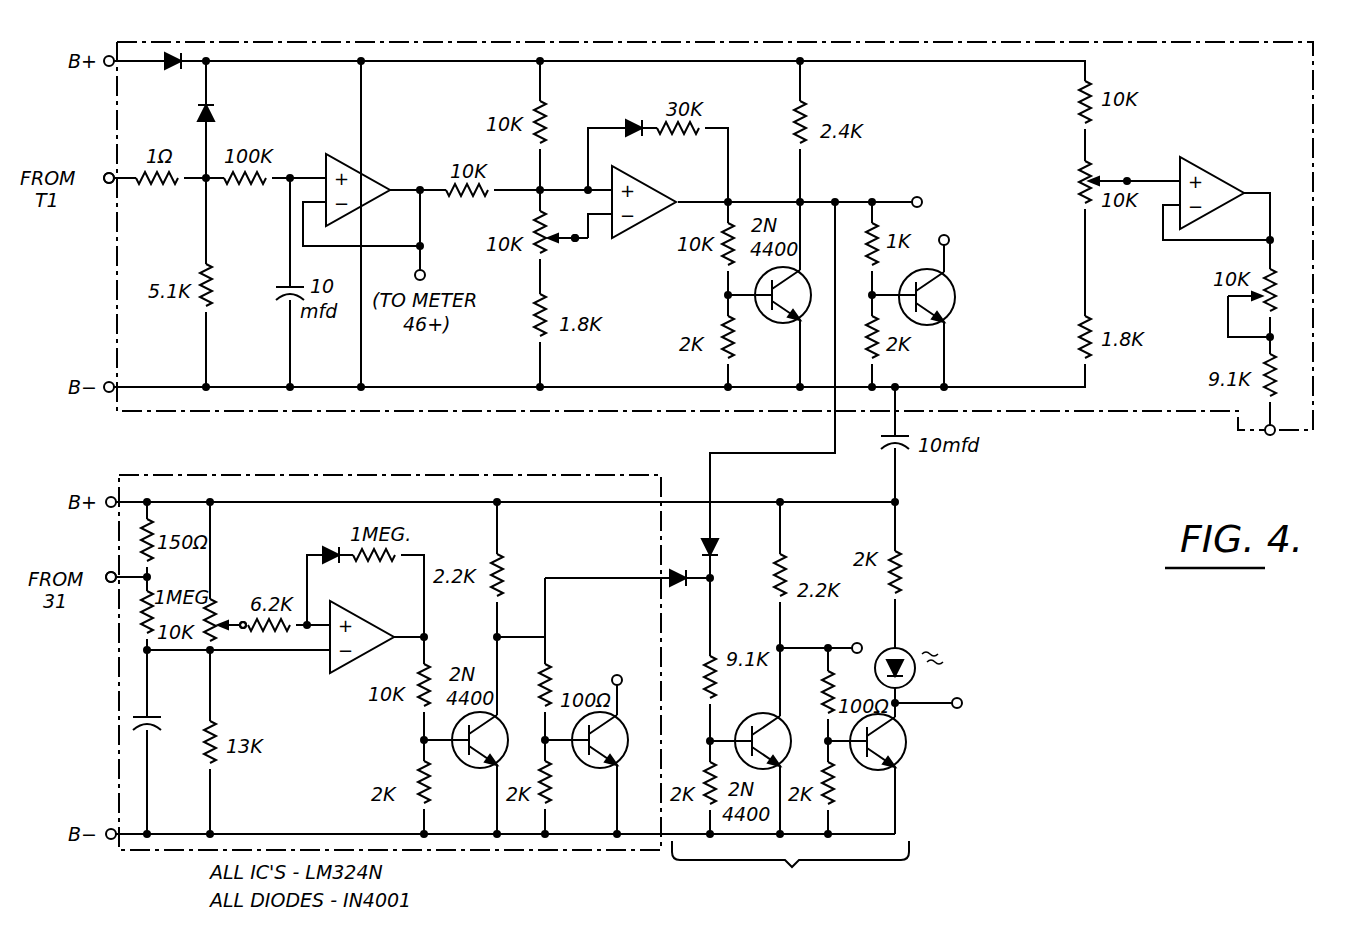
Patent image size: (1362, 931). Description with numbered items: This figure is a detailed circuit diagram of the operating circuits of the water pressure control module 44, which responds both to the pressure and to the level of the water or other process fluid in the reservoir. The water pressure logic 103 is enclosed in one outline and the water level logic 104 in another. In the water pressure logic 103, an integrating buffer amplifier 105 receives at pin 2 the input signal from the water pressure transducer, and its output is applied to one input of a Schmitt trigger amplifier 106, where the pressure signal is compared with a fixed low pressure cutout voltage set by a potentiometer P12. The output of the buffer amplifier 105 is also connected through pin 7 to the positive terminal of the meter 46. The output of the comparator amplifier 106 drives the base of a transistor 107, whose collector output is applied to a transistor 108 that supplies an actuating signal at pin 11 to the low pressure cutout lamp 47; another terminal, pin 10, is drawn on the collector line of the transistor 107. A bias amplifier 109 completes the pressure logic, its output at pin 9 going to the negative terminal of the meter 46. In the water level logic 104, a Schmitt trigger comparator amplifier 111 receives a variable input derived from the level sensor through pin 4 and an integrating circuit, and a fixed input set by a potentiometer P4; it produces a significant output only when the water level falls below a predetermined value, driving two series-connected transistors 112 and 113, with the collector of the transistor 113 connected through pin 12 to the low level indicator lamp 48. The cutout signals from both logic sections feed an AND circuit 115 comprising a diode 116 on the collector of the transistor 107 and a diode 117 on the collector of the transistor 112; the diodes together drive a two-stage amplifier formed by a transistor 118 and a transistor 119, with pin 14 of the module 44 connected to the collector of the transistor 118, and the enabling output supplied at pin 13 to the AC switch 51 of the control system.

The pin 2 is at (106, 189).
The input terminal from level sensor 31 4 is at (107, 565).
The pin 7 is at (431, 269).
The pin 9 is at (1279, 419).
The output terminal 10 is at (921, 190).
The pin 11 is at (957, 239).
The pin 12 is at (630, 681).
The pin 13 is at (949, 694).
The pin 14 is at (861, 636).
The water pressure control module 44 is at (914, 795).
The meter 46 is at (1257, 449).
The low pressure cutout lamp 47 is at (947, 234).
The low level indicator lamp 48 is at (604, 631).
The AC switch 51 is at (974, 687).
The water pressure logic 103 is at (1037, 42).
The water level logic circuits 104 is at (514, 476).
The integrating buffer amplifier 105 is at (356, 164).
The Schmitt trigger amplifier 106 is at (652, 184).
The transistor 107 is at (755, 314).
The transistor 108 is at (953, 312).
The amplifier 109 is at (1216, 161).
The Schmitt trigger comparator amplifier 111 is at (396, 590).
The transistor 112 is at (488, 772).
The transistor 113 is at (611, 764).
The AND circuit 115 is at (790, 869).
The diode 116 is at (719, 546).
The diode 117 is at (670, 586).
The transistor 118 is at (768, 711).
The transistor 119 is at (905, 766).
The potentiometer P12 is at (575, 248).
The potentiometer P4 is at (220, 606).